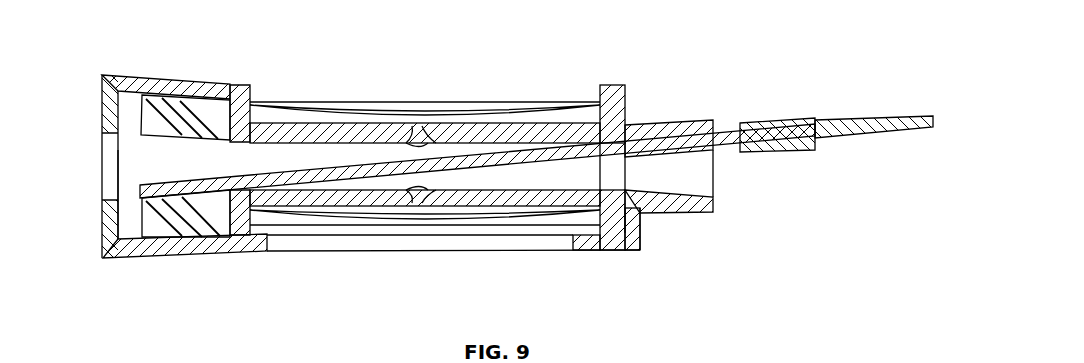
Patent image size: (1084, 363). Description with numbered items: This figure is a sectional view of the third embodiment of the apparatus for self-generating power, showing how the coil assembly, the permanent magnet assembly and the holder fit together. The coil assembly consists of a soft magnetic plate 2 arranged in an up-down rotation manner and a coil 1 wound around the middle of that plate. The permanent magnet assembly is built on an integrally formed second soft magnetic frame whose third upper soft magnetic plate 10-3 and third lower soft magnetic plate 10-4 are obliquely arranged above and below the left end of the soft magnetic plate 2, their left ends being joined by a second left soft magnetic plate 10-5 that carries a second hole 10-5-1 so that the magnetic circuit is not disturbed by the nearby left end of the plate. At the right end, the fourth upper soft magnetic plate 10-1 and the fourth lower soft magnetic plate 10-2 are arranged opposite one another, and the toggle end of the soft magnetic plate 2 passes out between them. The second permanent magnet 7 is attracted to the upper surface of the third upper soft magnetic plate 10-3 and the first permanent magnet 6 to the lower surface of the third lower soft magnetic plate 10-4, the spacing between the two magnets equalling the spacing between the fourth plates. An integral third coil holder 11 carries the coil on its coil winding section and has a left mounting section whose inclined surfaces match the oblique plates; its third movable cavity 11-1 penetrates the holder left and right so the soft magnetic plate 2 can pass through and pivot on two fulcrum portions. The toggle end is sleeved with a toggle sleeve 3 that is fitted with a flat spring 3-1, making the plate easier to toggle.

The coil 1 is at (342, 118).
The soft magnetic plate 2 is at (370, 173).
The toggle sleeve 3 is at (787, 120).
The flat spring 3-1 is at (862, 119).
The first permanent magnet 6 is at (162, 222).
The second permanent magnet 7 is at (152, 98).
The fourth upper soft magnetic plate 10-1 is at (667, 122).
The fourth lower soft magnetic plate 10-2 is at (673, 210).
The third upper soft magnetic plate 10-3 is at (197, 84).
The third lower soft magnetic plate 10-4 is at (141, 240).
The second left soft magnetic plate 10-5 is at (103, 100).
The second hole 10-5-1 is at (110, 173).
The third coil holder 11 is at (502, 120).
The third movable cavity 11-1 is at (516, 180).